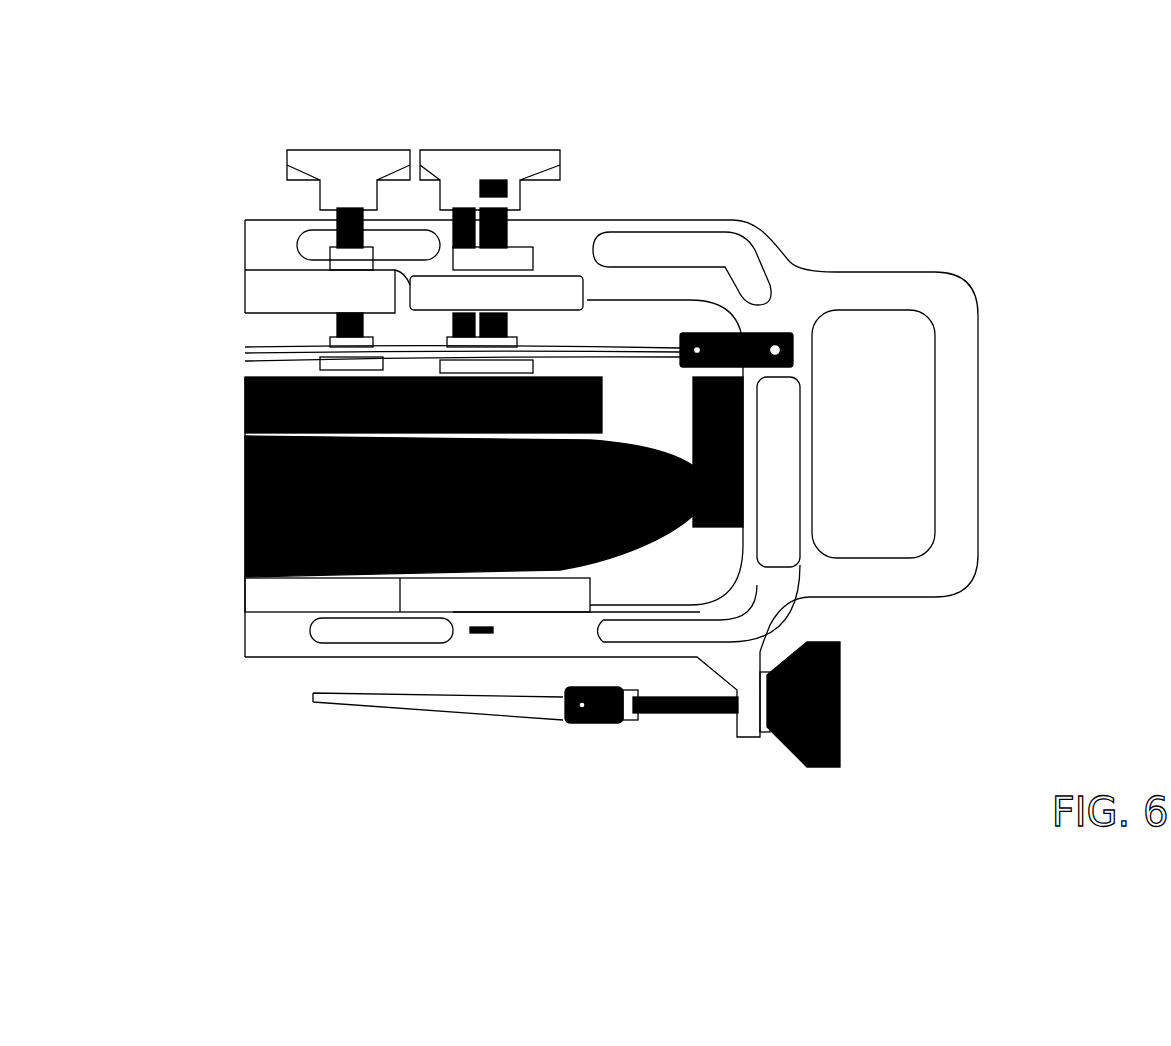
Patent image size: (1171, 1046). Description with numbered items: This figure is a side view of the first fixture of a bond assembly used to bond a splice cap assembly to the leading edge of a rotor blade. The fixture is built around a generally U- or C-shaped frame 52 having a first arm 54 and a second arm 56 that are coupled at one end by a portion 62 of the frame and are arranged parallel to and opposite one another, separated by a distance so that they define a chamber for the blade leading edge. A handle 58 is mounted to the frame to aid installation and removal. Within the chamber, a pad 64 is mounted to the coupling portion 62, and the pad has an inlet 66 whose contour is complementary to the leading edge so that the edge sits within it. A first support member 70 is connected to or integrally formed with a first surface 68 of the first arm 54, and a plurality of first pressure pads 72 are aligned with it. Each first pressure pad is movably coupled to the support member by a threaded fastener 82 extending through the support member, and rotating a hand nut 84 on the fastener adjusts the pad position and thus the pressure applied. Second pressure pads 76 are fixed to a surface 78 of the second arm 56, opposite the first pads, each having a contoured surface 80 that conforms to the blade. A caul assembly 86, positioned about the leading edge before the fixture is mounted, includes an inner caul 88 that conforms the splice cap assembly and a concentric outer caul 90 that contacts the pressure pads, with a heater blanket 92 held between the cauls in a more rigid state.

The frame 52 is at (876, 229).
The first arm 54 is at (677, 227).
The second arm 56 is at (583, 630).
The handle 58 is at (958, 393).
The portion of the frame 62 is at (777, 467).
The pad 64 is at (747, 445).
The inlet 66 is at (747, 488).
The first surface 68 is at (608, 283).
The first support member 70 is at (540, 300).
The first pressure pads 72 is at (605, 407).
The second pressure pads 76 is at (423, 597).
The surface of the second arm 78 is at (610, 615).
The surface of the second pressure pad 80 is at (497, 580).
The threaded fastener 82 is at (458, 240).
The hand nut 84 is at (484, 180).
The caul assembly 86 is at (640, 565).
The inner caul 88 is at (247, 466).
The outer caul 90 is at (690, 540).
The heater blanket 92 is at (487, 627).